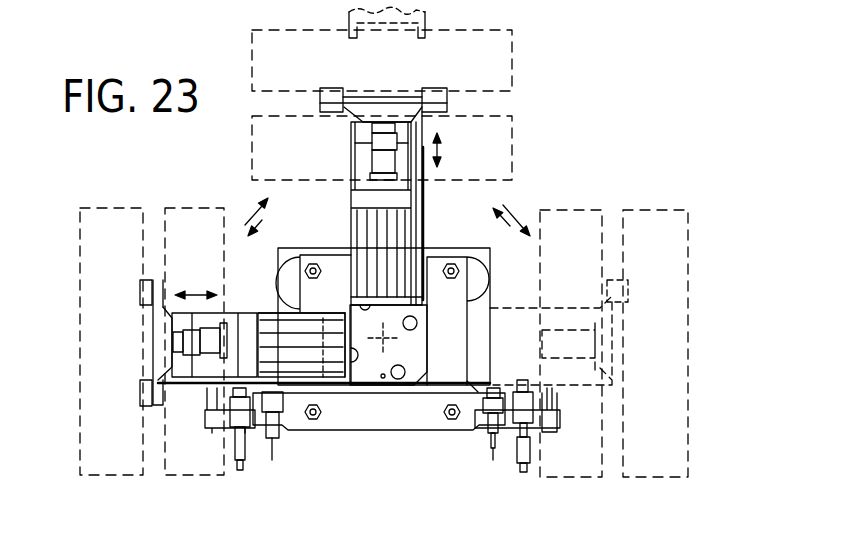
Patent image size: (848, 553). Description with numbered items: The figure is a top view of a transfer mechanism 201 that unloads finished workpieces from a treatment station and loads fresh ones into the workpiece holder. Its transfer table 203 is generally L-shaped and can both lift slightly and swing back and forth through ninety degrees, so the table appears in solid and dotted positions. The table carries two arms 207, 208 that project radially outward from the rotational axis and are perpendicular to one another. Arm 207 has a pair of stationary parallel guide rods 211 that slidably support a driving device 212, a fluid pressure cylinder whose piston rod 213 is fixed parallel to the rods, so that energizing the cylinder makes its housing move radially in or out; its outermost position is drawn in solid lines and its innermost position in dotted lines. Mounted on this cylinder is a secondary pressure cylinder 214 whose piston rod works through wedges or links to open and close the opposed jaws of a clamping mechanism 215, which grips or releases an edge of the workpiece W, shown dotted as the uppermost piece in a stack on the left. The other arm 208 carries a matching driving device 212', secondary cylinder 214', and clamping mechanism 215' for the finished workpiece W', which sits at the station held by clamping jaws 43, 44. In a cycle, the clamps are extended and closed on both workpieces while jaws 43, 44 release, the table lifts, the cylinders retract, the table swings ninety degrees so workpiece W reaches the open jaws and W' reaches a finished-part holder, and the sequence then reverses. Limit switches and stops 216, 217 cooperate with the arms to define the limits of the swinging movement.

The clamping jaw 43 is at (420, 20).
The clamping jaw 44 is at (387, 24).
The workpiece W is at (84, 341).
The workpiece W' is at (413, 105).
The transfer mechanism 201 is at (580, 168).
The transfer table 203 is at (378, 389).
The arm 207 is at (271, 316).
The arm 208 is at (411, 237).
The guide rods 211 is at (287, 322).
The driving device 212 is at (207, 363).
The driving device 212' is at (359, 208).
The piston rod 213 is at (352, 290).
The secondary pressure cylinder 214 is at (215, 318).
The secondary pressure cylinder 214' is at (347, 151).
The clamping mechanism 215 is at (133, 343).
The clamping mechanism 215' is at (383, 86).
The limit switch and stop 216 is at (233, 403).
The limit switch and stop 217 is at (212, 400).